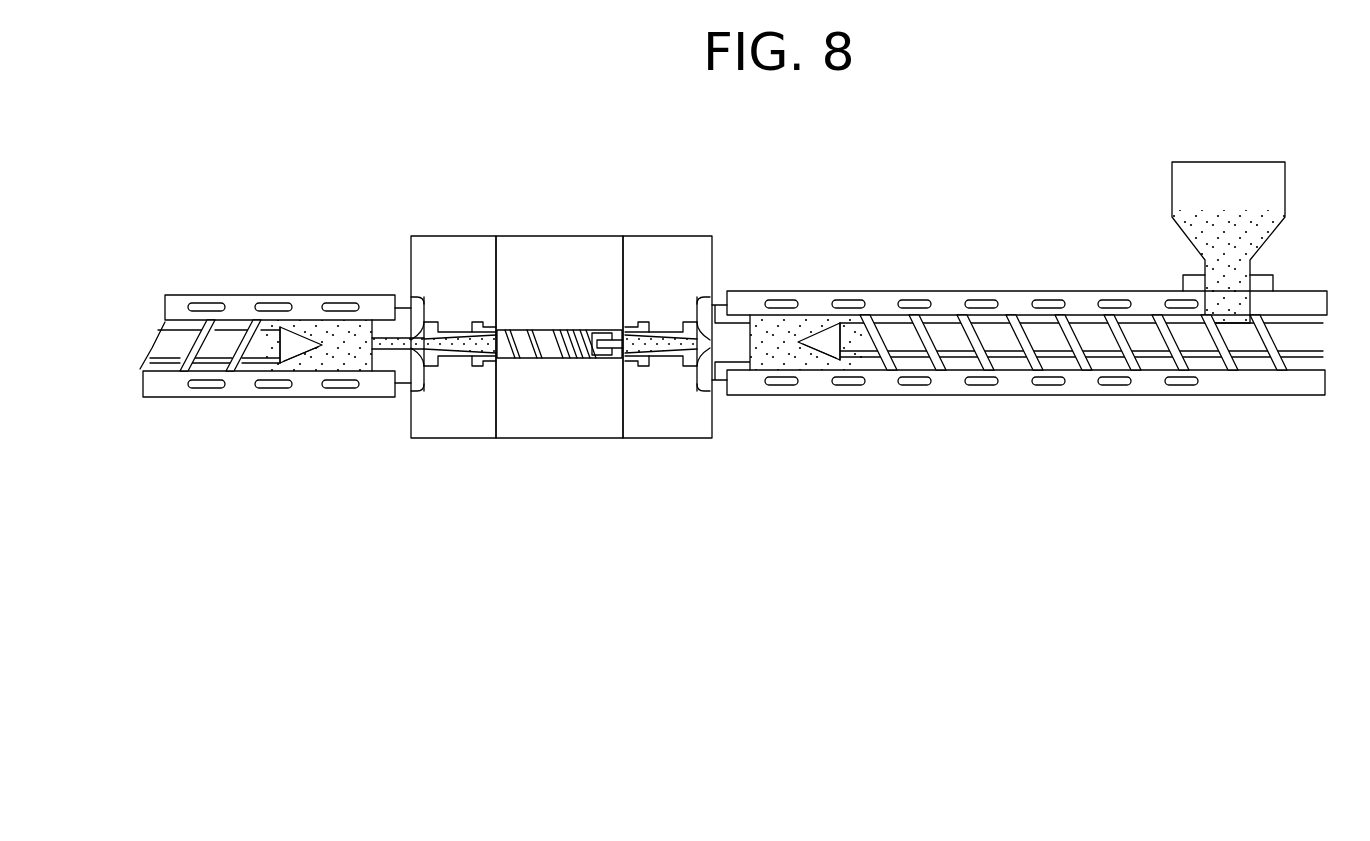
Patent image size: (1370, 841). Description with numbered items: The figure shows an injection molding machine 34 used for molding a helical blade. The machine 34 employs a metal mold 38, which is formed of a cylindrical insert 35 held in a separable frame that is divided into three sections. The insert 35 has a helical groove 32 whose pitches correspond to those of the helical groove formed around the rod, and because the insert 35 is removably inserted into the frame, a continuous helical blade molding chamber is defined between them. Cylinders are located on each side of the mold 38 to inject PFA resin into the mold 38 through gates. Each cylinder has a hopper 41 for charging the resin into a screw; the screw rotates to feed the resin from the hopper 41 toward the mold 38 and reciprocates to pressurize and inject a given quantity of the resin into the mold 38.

The helical groove 32 is at (542, 358).
The injection molding machine 34 is at (1035, 313).
The cylindrical insert 35 is at (545, 330).
The metal mold 38 is at (629, 449).
The hopper 41 is at (1275, 203).